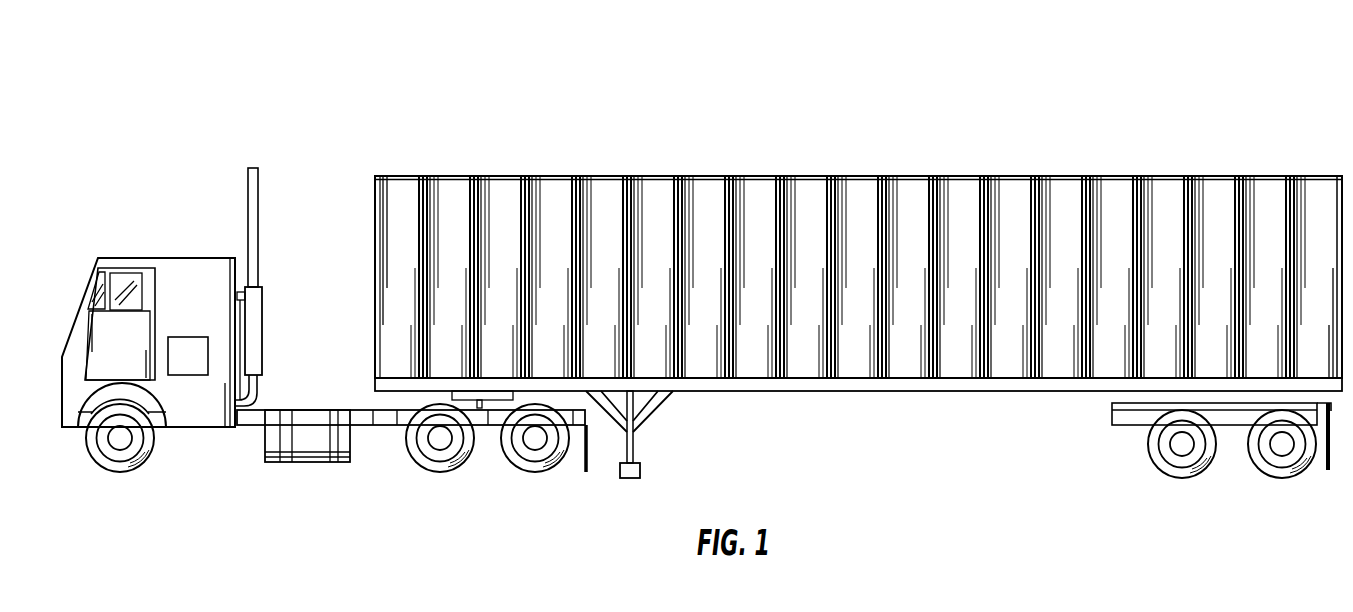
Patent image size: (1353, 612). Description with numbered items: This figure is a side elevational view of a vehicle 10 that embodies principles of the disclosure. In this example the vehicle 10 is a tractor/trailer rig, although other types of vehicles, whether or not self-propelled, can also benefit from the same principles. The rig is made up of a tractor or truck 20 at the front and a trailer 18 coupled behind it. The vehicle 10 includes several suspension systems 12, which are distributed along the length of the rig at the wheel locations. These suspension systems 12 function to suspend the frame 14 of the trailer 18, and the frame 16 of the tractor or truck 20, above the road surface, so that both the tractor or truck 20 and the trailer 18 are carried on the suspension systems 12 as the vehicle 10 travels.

The vehicle 10 is at (889, 123).
The suspension systems 12 is at (156, 460).
The frame 14 is at (790, 393).
The frame 16 is at (253, 430).
The trailer 18 is at (1162, 176).
The tractor or truck 20 is at (165, 258).